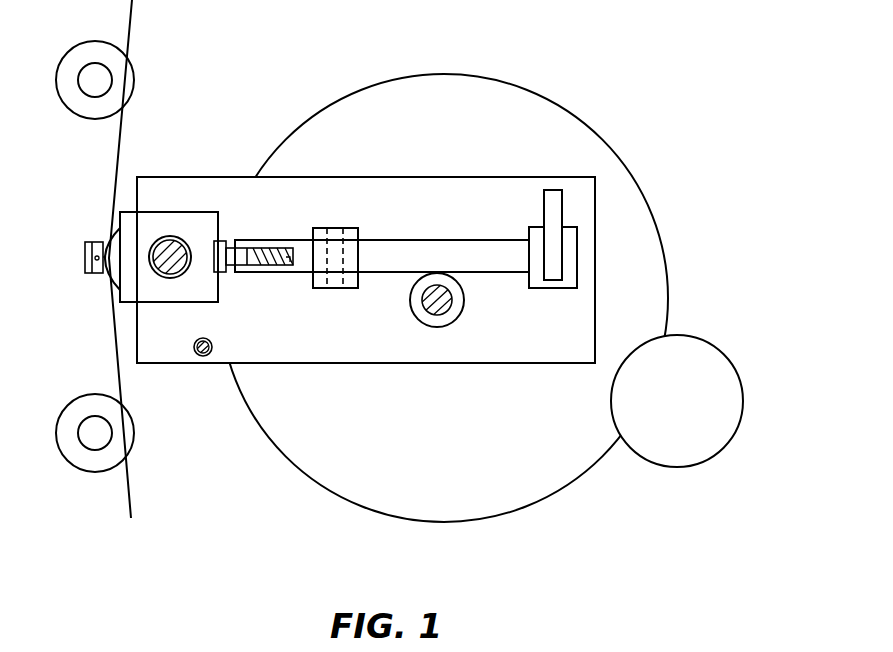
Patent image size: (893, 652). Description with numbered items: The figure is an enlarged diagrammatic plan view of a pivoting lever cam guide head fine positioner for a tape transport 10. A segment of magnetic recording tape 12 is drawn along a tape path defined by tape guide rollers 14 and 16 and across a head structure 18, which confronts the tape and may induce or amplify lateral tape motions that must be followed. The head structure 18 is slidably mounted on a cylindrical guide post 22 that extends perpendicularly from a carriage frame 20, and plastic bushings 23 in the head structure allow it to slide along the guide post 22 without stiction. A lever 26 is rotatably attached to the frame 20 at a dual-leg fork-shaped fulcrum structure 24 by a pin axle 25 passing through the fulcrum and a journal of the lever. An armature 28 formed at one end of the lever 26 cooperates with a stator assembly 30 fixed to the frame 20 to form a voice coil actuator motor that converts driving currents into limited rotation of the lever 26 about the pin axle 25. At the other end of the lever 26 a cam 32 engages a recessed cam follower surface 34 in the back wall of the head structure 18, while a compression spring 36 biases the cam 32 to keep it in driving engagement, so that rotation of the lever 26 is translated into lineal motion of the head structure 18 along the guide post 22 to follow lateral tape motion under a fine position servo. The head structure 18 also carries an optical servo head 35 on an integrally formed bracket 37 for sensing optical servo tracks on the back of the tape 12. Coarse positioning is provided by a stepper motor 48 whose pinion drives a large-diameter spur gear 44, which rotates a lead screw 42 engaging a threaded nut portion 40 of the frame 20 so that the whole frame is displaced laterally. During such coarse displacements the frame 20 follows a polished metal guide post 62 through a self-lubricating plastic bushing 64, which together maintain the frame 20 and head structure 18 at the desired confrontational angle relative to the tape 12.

The tape transport 10 is at (210, 554).
The tape 12 is at (115, 345).
The tape guide roller 14 is at (121, 82).
The tape guide roller 16 is at (134, 440).
The head structure 18 is at (106, 234).
The frame 20 is at (230, 183).
The guide post 22 is at (183, 283).
The plastic bushing 23 is at (156, 247).
The fulcrum structure 24 is at (351, 289).
The pin axle 25 is at (336, 228).
The lever 26 is at (443, 245).
The armature 28 is at (536, 229).
The stator assembly 30 is at (553, 190).
The cam 32 is at (222, 241).
The cam follower surface 34 is at (203, 212).
The optical servo head 35 is at (85, 256).
The compression spring 36 is at (262, 268).
The bracket 37 is at (96, 275).
The threaded nut portion 40 is at (455, 323).
The lead screw 42 is at (450, 297).
The spur gear 44 is at (347, 502).
The stepper motor 48 is at (722, 350).
The guide post 62 is at (210, 343).
The bushing 64 is at (203, 356).